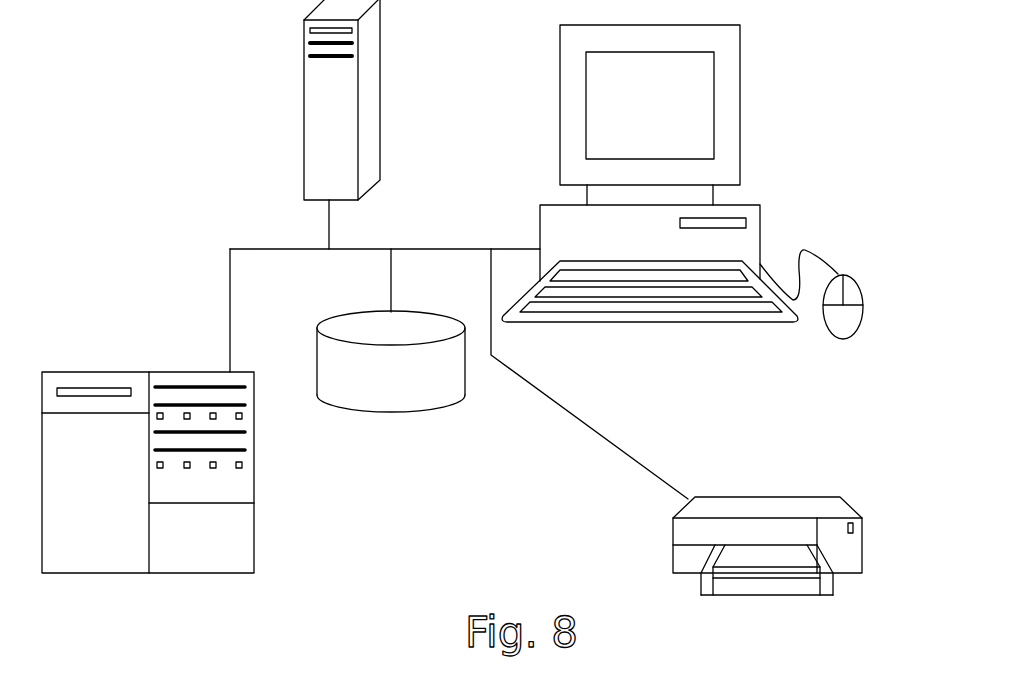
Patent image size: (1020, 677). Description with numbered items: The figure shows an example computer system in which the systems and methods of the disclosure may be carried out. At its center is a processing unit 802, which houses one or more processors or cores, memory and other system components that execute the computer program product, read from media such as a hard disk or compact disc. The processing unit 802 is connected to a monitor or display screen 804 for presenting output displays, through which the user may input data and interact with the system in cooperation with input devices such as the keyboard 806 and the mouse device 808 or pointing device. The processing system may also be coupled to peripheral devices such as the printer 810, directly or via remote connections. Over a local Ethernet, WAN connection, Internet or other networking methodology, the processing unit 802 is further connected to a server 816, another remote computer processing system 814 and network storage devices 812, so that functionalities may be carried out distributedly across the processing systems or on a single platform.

The processing unit 802 is at (545, 230).
The display screen 804 is at (740, 101).
The keyboard 806 is at (707, 323).
The mouse device 808 is at (863, 322).
The printer 810 is at (748, 497).
The network storage devices 812 is at (413, 376).
The remote computer processing system 814 is at (380, 88).
The server 816 is at (192, 372).